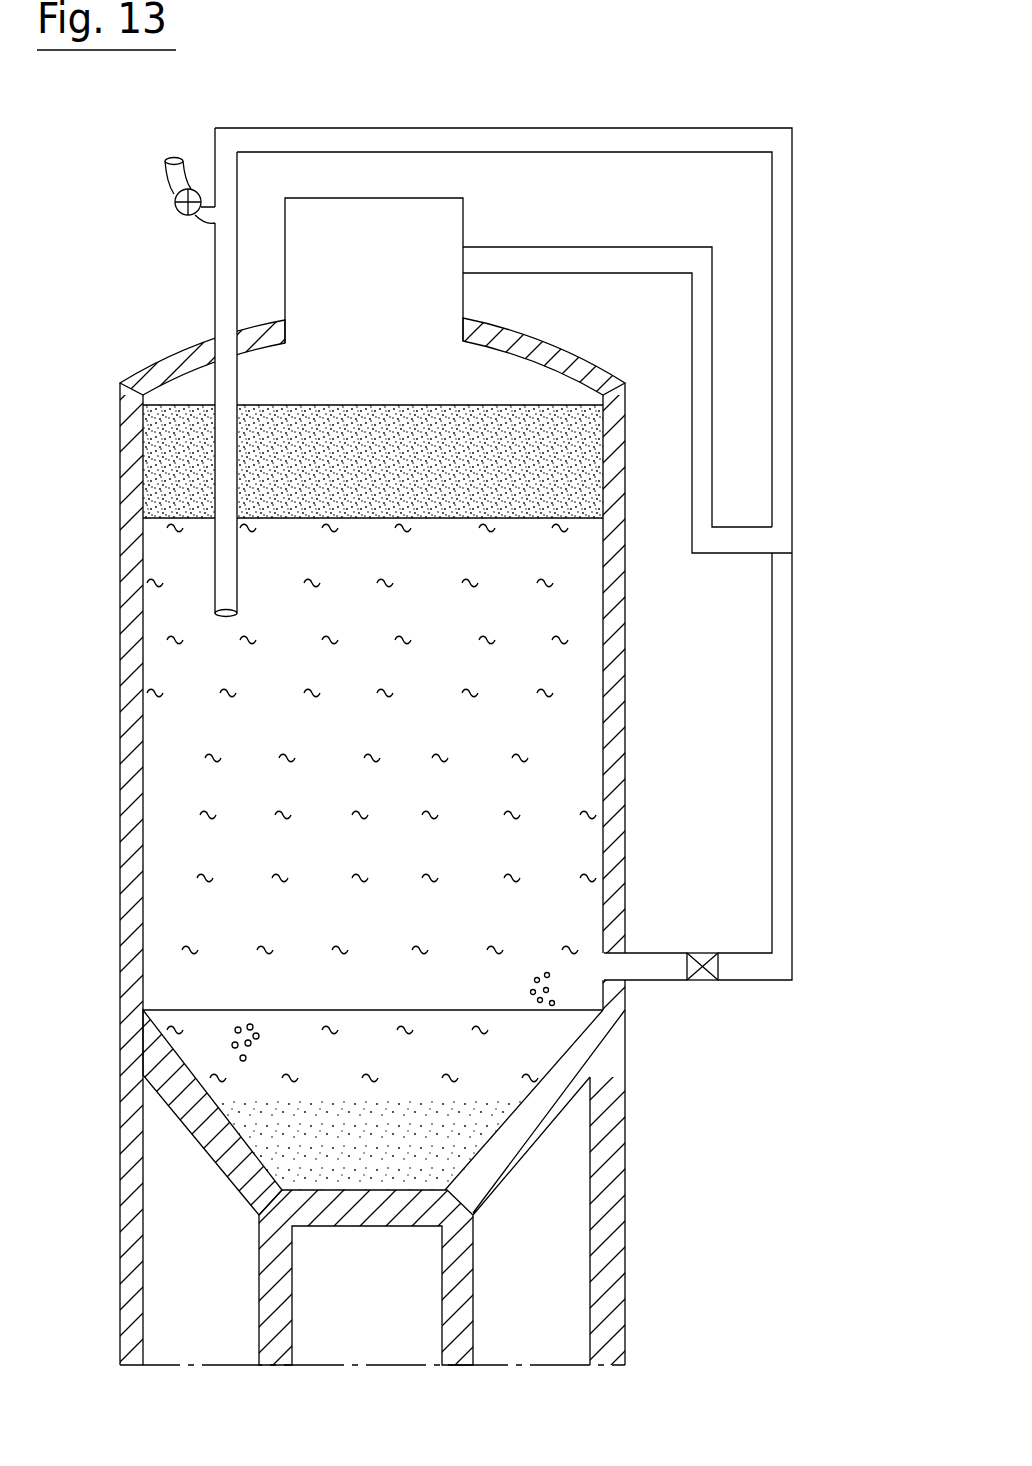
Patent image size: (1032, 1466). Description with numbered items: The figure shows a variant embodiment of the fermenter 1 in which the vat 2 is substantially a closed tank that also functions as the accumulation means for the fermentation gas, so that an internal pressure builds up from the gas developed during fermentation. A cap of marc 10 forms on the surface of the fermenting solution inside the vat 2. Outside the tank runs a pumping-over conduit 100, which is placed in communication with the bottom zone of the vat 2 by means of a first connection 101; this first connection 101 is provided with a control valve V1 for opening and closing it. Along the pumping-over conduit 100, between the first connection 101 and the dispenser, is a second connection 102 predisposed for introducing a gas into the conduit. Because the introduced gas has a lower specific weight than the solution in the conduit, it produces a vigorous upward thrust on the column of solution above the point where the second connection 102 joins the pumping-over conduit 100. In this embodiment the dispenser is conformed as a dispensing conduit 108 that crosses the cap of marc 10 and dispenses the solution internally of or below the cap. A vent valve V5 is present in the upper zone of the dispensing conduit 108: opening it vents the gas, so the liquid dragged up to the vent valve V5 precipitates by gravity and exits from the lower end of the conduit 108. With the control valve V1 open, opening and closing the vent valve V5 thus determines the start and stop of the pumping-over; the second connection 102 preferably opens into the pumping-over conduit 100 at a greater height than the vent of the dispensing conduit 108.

The separation apparatus 1 is at (830, 47).
The vat 2 is at (118, 1023).
The cap of marc 10 is at (393, 477).
The pumping-over conduit 100 is at (809, 491).
The first connection 101 is at (648, 935).
The second connection 102 is at (655, 237).
The dispensing conduit 108 is at (200, 375).
The control valve V1 is at (716, 1000).
The vent valve V5 is at (151, 193).